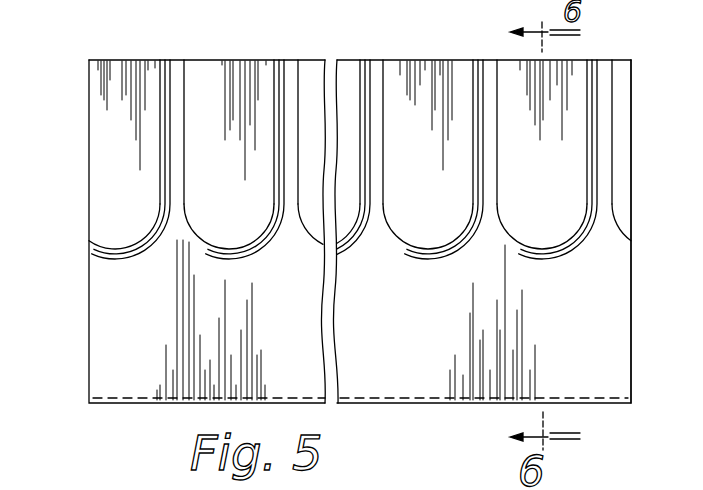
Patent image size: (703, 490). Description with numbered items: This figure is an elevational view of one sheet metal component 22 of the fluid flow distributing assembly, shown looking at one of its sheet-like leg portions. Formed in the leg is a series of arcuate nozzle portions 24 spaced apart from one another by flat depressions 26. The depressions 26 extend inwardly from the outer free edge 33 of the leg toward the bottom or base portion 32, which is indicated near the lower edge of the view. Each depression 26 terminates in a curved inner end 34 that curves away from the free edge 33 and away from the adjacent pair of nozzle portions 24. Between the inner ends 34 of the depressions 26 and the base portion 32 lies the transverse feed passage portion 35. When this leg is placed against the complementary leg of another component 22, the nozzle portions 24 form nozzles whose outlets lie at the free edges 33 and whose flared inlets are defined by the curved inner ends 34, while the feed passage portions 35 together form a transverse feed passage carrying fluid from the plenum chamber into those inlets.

The sheet metal component 22 is at (632, 321).
The arcuate nozzle portion 24 is at (173, 72).
The flat depression 26 is at (89, 81).
The base portion 32 is at (572, 398).
The outer free edge 33 is at (240, 60).
The inner end of depression 34 is at (128, 246).
The transverse feed passage portion 35 is at (613, 349).